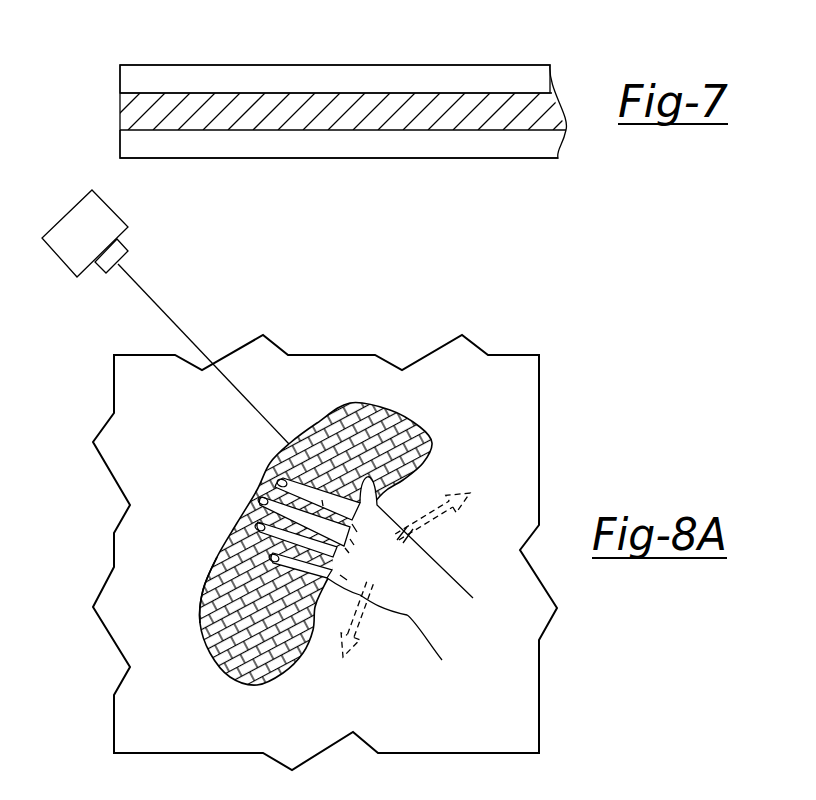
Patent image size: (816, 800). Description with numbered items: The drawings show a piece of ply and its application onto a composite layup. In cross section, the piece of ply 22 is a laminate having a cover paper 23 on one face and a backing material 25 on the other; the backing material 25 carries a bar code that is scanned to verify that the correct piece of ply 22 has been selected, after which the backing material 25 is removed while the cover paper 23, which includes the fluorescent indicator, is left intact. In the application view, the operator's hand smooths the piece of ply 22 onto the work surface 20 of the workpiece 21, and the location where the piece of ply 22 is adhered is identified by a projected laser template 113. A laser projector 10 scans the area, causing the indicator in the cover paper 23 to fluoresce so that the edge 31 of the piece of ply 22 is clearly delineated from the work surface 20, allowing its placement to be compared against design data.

In FIG. 8A, the laser projector 10 is at (95, 243).
In FIG. 8A, the work surface 20 is at (416, 685).
In FIG. 8A, the workpiece 21 is at (308, 355).
In FIG. 7, the piece of ply 22 is at (112, 110).
In FIG. 8A, the piece of ply 22 is at (212, 516).
In FIG. 7, the cover paper 23 is at (237, 65).
In FIG. 8A, the cover paper 23 is at (273, 457).
In FIG. 7, the backing material 25 is at (355, 158).
In FIG. 8A, the edge 31 is at (381, 405).
In FIG. 8A, the laser template 113 is at (205, 572).